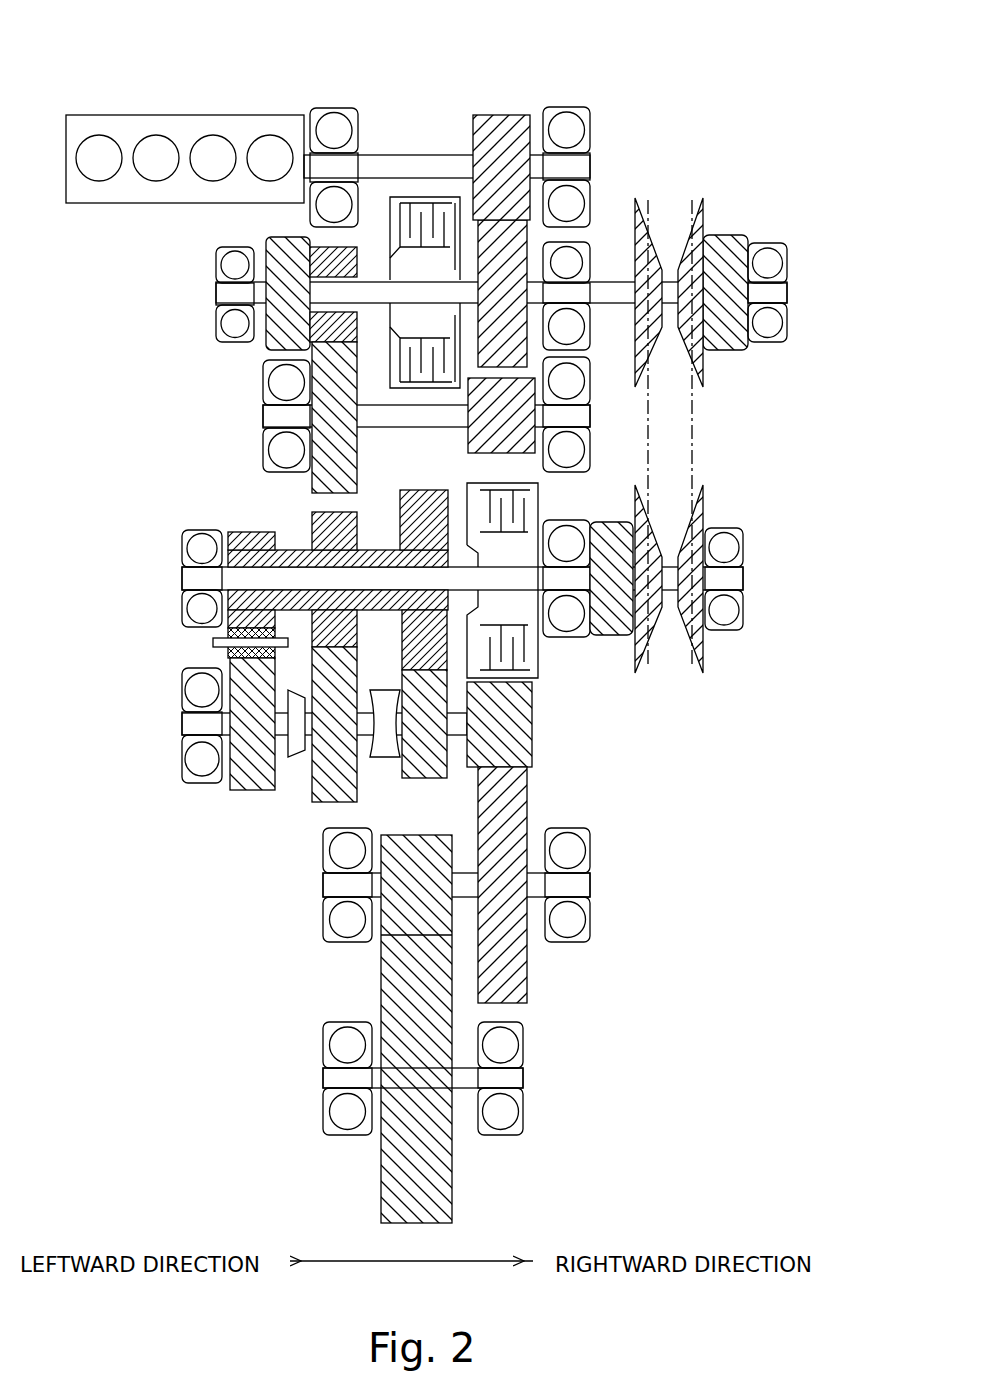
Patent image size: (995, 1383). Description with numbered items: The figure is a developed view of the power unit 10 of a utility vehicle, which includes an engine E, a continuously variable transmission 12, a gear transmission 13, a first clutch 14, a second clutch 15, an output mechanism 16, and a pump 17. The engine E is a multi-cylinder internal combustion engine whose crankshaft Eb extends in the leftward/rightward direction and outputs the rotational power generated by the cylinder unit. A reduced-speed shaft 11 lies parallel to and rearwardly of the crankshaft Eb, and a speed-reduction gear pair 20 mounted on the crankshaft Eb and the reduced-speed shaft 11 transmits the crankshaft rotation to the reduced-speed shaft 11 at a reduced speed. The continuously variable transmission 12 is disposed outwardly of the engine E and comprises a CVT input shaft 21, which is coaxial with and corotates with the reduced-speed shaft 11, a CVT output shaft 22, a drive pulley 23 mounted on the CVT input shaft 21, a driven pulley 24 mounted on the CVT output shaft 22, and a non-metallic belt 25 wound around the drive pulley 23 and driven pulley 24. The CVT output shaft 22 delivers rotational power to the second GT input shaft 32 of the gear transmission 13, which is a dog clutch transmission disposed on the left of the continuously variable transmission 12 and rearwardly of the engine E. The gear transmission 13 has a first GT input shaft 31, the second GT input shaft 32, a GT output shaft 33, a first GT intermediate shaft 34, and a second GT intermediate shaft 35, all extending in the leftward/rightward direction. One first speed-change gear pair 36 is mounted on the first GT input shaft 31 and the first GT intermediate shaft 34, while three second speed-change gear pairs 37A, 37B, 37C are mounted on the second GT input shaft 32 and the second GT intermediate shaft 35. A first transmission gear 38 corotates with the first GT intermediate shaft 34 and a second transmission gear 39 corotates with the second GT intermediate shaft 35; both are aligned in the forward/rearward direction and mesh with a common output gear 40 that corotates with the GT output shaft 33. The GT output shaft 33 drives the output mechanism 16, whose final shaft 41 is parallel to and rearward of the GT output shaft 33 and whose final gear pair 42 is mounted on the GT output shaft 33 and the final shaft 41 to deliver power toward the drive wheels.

The engine E is at (196, 112).
The crankshaft Eb is at (583, 168).
The power unit 10 is at (768, 95).
The reduced-speed shaft 11 is at (560, 290).
The continuously variable transmission 12 is at (770, 215).
The gear transmission 13 is at (172, 849).
The first clutch 14 is at (427, 197).
The second clutch 15 is at (540, 660).
The output mechanism 16 is at (335, 992).
The pump 17 is at (278, 246).
The speed-reduction gear pair 20 is at (500, 130).
The CVT input shaft 21 is at (782, 292).
The CVT output shaft 22 is at (735, 580).
The drive pulley 23 is at (700, 198).
The driven pulley 24 is at (703, 640).
The belt 25 is at (705, 455).
The first GT input shaft 31 is at (224, 293).
The second GT input shaft 32 is at (192, 578).
The GT output shaft 33 is at (332, 882).
The first GT intermediate shaft 34 is at (275, 415).
The second GT intermediate shaft 35 is at (190, 722).
The first speed-change gear pair 36 is at (327, 478).
The second speed-change gear pair 37A is at (410, 765).
The second speed-change gear pair 37B is at (300, 631).
The second speed-change gear pair 37C is at (243, 775).
The first transmission gear 38 is at (520, 395).
The second transmission gear 39 is at (525, 745).
The common output gear 40 is at (525, 965).
The final shaft 41 is at (517, 1078).
The final gear pair 42 is at (390, 1168).